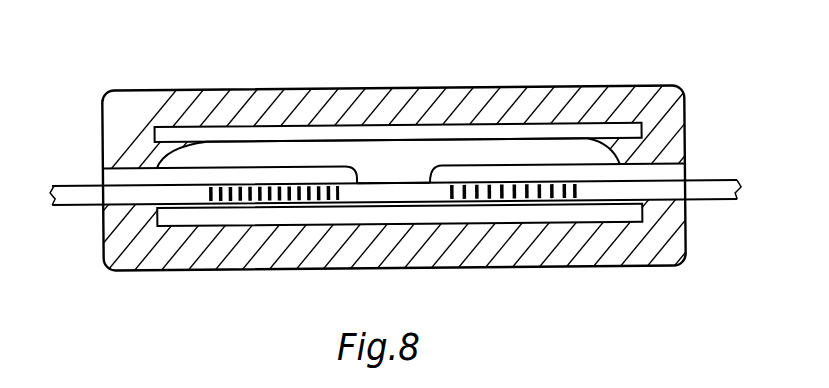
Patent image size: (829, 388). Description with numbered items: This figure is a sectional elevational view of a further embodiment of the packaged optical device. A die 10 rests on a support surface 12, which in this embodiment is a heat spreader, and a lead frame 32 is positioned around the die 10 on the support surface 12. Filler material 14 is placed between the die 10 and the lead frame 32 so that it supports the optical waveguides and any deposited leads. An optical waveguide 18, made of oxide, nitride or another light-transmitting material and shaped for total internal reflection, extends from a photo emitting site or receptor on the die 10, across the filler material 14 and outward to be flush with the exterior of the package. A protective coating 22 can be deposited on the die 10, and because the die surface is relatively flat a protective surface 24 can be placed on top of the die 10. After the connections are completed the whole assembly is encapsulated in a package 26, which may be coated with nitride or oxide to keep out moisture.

The die 10 is at (398, 196).
The support surface 12 is at (232, 205).
The filler material 14 is at (560, 193).
The optical waveguide 18 is at (140, 166).
The protective coating 22 is at (407, 179).
The protective surface 24 is at (300, 130).
The package 26 is at (160, 95).
The lead frame 32 is at (73, 187).